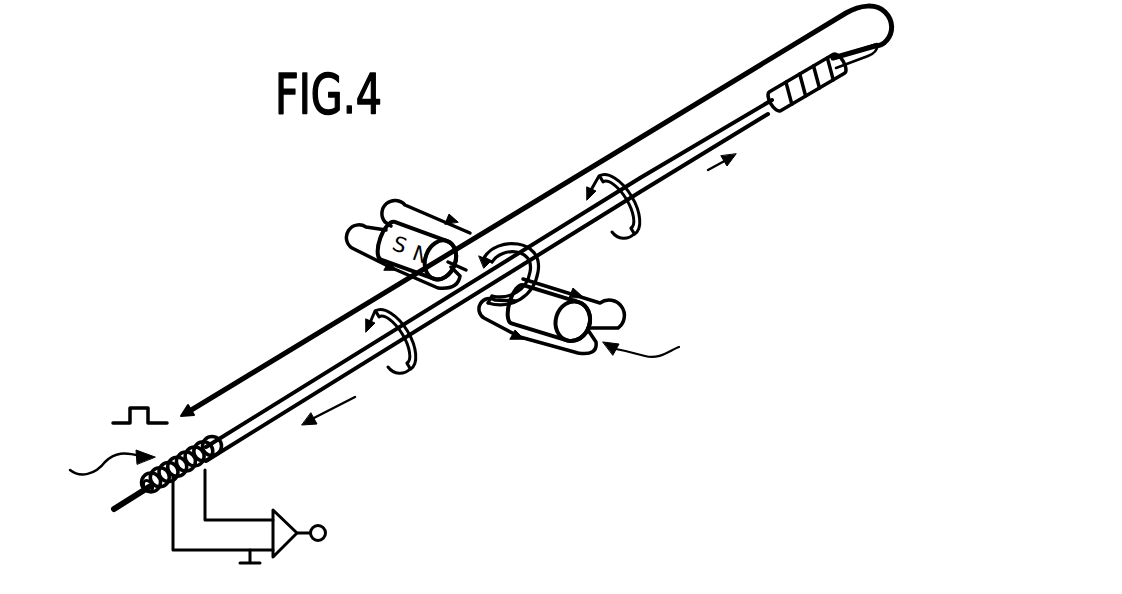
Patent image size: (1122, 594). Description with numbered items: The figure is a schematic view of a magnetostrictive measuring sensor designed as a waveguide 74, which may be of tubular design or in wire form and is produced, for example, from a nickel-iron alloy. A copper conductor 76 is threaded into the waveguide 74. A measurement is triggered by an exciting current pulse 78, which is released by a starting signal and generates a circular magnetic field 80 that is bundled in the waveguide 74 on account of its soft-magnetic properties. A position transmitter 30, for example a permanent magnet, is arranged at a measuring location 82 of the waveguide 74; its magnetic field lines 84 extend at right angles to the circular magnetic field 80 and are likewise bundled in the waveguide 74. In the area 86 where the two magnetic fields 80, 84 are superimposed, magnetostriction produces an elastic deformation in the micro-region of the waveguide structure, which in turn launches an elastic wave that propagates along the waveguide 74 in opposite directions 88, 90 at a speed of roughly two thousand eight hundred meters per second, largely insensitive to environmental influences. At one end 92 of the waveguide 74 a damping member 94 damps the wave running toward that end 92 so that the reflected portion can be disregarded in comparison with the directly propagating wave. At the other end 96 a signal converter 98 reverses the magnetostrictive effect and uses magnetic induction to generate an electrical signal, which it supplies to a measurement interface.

The position transmitter 30 is at (585, 344).
The waveguide 74 is at (763, 116).
The copper conductor 76 is at (120, 511).
The exciting current pulse 78 is at (140, 408).
The circular magnetic field 80 is at (623, 177).
The measuring location 82 is at (657, 340).
The magnetic field lines 84 is at (619, 311).
The area 86 is at (519, 230).
The direction 88 is at (355, 397).
The direction 90 is at (718, 168).
The end of the waveguide 92 is at (777, 115).
The damping member 94 is at (848, 72).
The other end of the waveguide 96 is at (200, 475).
The signal converter 98 is at (98, 454).